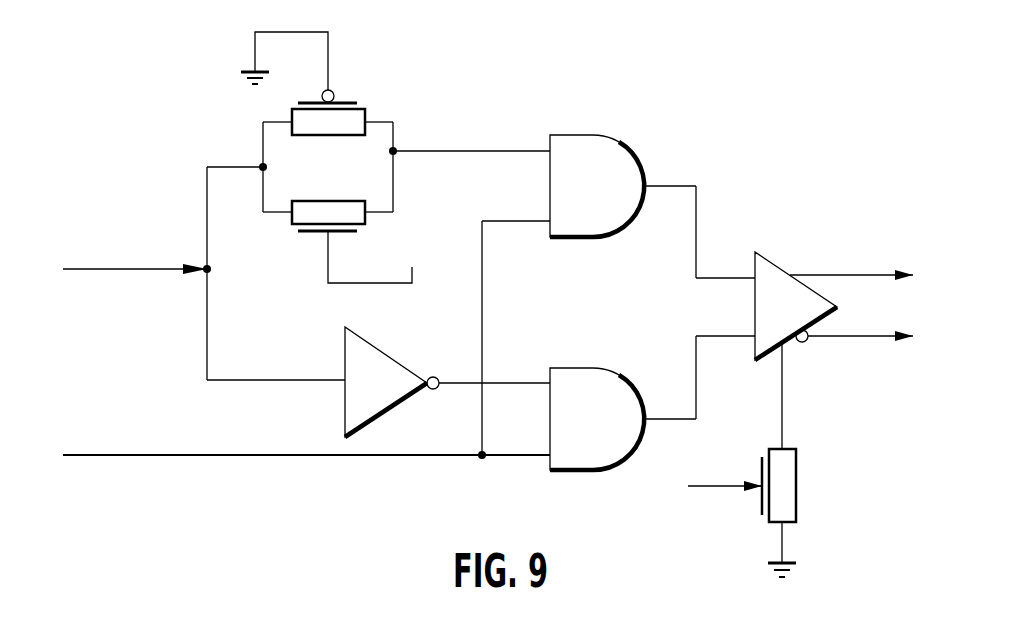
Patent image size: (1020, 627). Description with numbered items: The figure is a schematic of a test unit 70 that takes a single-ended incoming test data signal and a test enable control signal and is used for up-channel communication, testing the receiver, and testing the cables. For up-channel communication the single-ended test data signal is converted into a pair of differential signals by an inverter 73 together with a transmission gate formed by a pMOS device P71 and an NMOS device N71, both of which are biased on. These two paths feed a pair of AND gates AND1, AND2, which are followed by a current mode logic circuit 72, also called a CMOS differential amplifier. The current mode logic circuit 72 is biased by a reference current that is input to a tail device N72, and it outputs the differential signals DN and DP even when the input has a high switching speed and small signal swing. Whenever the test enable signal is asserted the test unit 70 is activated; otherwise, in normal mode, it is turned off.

The test unit 70 is at (488, 304).
The current mode logic circuit 72 is at (787, 276).
The inverter 73 is at (375, 367).
The pMOS device P71 is at (352, 111).
The NMOS device N71 is at (420, 251).
The tail device N72 is at (790, 474).
The AND gate AND1 is at (617, 152).
The AND gate AND2 is at (617, 385).